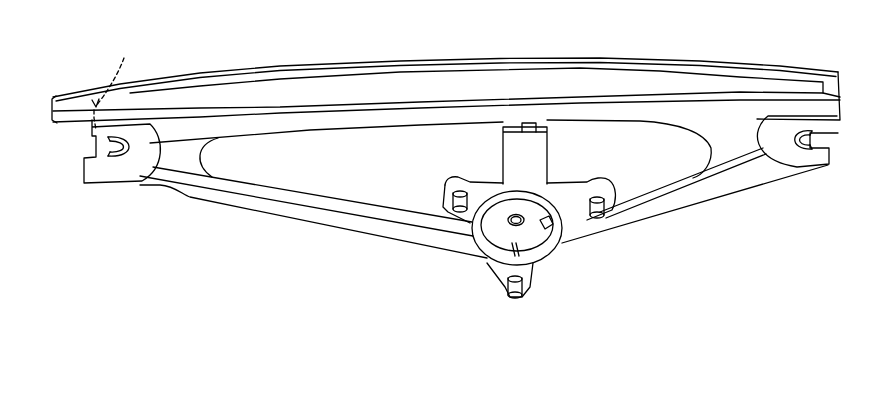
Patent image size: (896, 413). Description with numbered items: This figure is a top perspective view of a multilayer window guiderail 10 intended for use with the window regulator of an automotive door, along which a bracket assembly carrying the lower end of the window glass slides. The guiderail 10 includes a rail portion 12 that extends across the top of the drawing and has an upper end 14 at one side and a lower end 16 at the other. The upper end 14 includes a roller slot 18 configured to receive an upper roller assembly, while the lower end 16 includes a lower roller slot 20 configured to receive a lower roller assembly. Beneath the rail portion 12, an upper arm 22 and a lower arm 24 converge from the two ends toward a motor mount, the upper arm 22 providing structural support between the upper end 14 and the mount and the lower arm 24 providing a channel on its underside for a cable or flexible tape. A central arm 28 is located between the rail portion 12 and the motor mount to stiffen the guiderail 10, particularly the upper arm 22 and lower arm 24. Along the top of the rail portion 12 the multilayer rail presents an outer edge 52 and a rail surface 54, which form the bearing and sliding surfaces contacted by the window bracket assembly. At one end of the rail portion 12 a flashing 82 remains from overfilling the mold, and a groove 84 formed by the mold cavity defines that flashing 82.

The multilayer window guiderail 10 is at (521, 38).
The rail portion 12 is at (175, 100).
The upper end 14 is at (840, 97).
The lower end 16 is at (88, 162).
The roller slot 18 is at (822, 133).
The lower roller slot 20 is at (103, 142).
The upper arm 22 is at (640, 217).
The lower arm 24 is at (317, 215).
The central arm 28 is at (532, 153).
The outer edge 52 is at (312, 65).
The rail surface 54 is at (397, 68).
The flashing 82 is at (63, 107).
The groove 84 is at (113, 85).